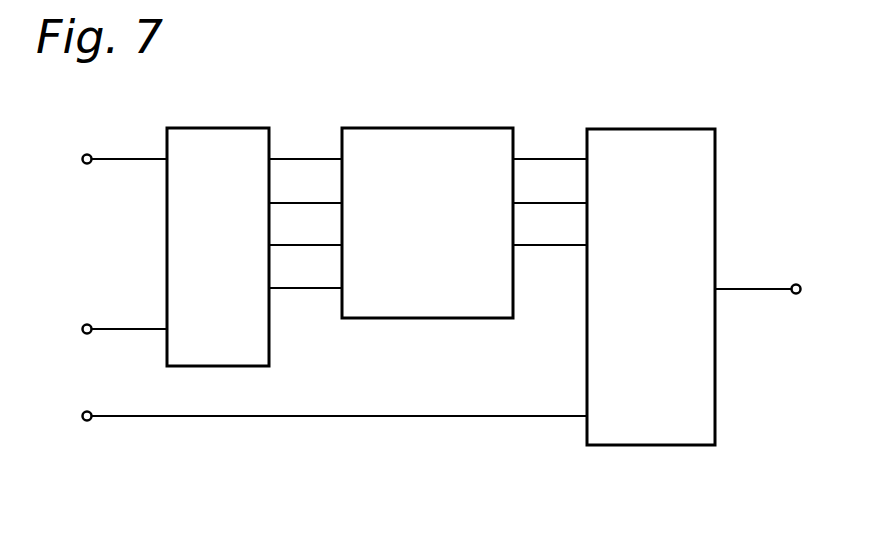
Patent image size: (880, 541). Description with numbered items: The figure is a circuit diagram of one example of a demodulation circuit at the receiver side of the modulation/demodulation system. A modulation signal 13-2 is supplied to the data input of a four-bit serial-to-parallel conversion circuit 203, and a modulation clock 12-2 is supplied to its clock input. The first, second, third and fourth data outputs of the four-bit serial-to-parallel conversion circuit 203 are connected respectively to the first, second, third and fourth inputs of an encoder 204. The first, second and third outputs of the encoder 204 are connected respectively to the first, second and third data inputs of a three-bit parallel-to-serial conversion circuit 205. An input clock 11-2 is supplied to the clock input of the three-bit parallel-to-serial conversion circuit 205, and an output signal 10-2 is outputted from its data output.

The four-bit serial-to-parallel conversion circuit 203 is at (222, 128).
The encoder 204 is at (425, 128).
The three-bit parallel-to-serial conversion circuit 205 is at (650, 128).
The modulation signal 13-2 is at (122, 158).
The modulation clock 12-2 is at (122, 328).
The input clock 11-2 is at (122, 415).
The output signal 10-2 is at (750, 288).